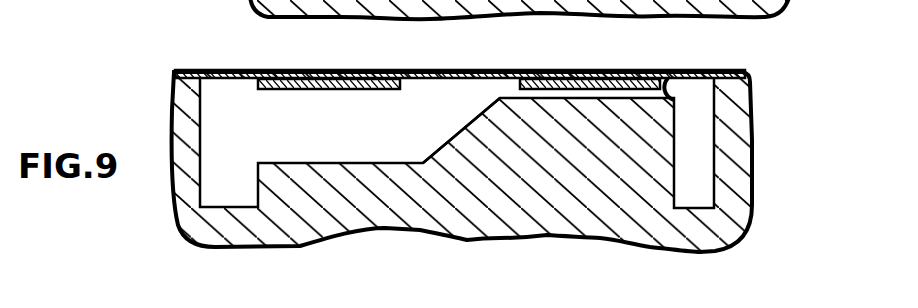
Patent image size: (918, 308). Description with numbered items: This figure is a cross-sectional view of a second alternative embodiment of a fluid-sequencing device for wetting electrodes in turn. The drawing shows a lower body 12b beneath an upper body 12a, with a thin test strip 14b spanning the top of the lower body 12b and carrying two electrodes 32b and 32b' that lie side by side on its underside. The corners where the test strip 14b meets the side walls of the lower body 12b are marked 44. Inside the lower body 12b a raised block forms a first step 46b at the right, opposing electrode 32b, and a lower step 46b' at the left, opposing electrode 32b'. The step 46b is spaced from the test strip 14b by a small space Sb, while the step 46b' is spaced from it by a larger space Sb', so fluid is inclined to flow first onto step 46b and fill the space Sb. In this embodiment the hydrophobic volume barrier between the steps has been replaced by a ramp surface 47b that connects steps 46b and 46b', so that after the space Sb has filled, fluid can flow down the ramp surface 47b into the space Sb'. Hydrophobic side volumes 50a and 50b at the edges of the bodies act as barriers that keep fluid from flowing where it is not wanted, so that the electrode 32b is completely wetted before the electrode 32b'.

The first substrate 12a is at (358, 22).
The second substrate 12b is at (464, 247).
The conductive layer 14b is at (498, 64).
The electrode strip 32b is at (590, 63).
The electrode strip 32b' is at (338, 64).
The seal corner 44 is at (185, 75).
The step 46b is at (700, 69).
The step 46b' is at (457, 143).
The ramp surface 47b is at (458, 147).
The side volume 50a is at (220, 7).
The sidewall 50b is at (217, 194).
The space Sb is at (756, 81).
The space Sb' is at (195, 108).